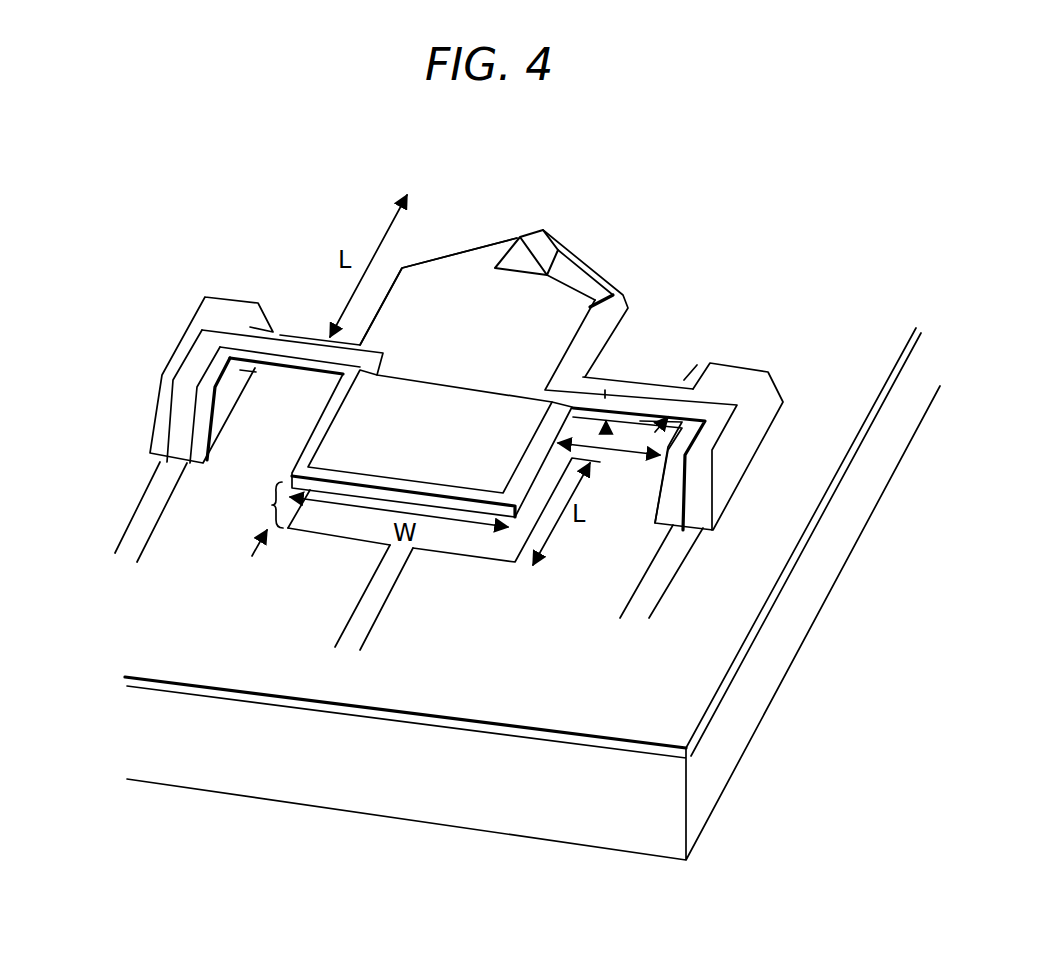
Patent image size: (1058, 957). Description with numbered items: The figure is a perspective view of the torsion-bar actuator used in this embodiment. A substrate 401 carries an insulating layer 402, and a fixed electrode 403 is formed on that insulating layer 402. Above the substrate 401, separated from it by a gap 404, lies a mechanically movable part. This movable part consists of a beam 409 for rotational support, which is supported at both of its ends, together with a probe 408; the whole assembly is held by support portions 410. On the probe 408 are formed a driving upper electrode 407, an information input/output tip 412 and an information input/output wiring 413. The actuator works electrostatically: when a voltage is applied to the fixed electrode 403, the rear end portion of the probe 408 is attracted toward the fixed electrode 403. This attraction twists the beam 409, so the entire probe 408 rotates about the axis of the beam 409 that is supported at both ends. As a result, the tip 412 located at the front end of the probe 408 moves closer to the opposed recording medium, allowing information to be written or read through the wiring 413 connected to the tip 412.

The substrate 401 is at (749, 732).
The insulating layer 402 is at (758, 621).
The fixed electrode 403 is at (385, 597).
The gap 404 is at (469, 408).
The driving upper electrode 407 is at (336, 438).
The probe 408 is at (469, 258).
The beam 409 is at (647, 388).
The support portions 410 is at (165, 372).
The information input/output tip 412 is at (548, 234).
The information input/output wiring 413 is at (623, 297).